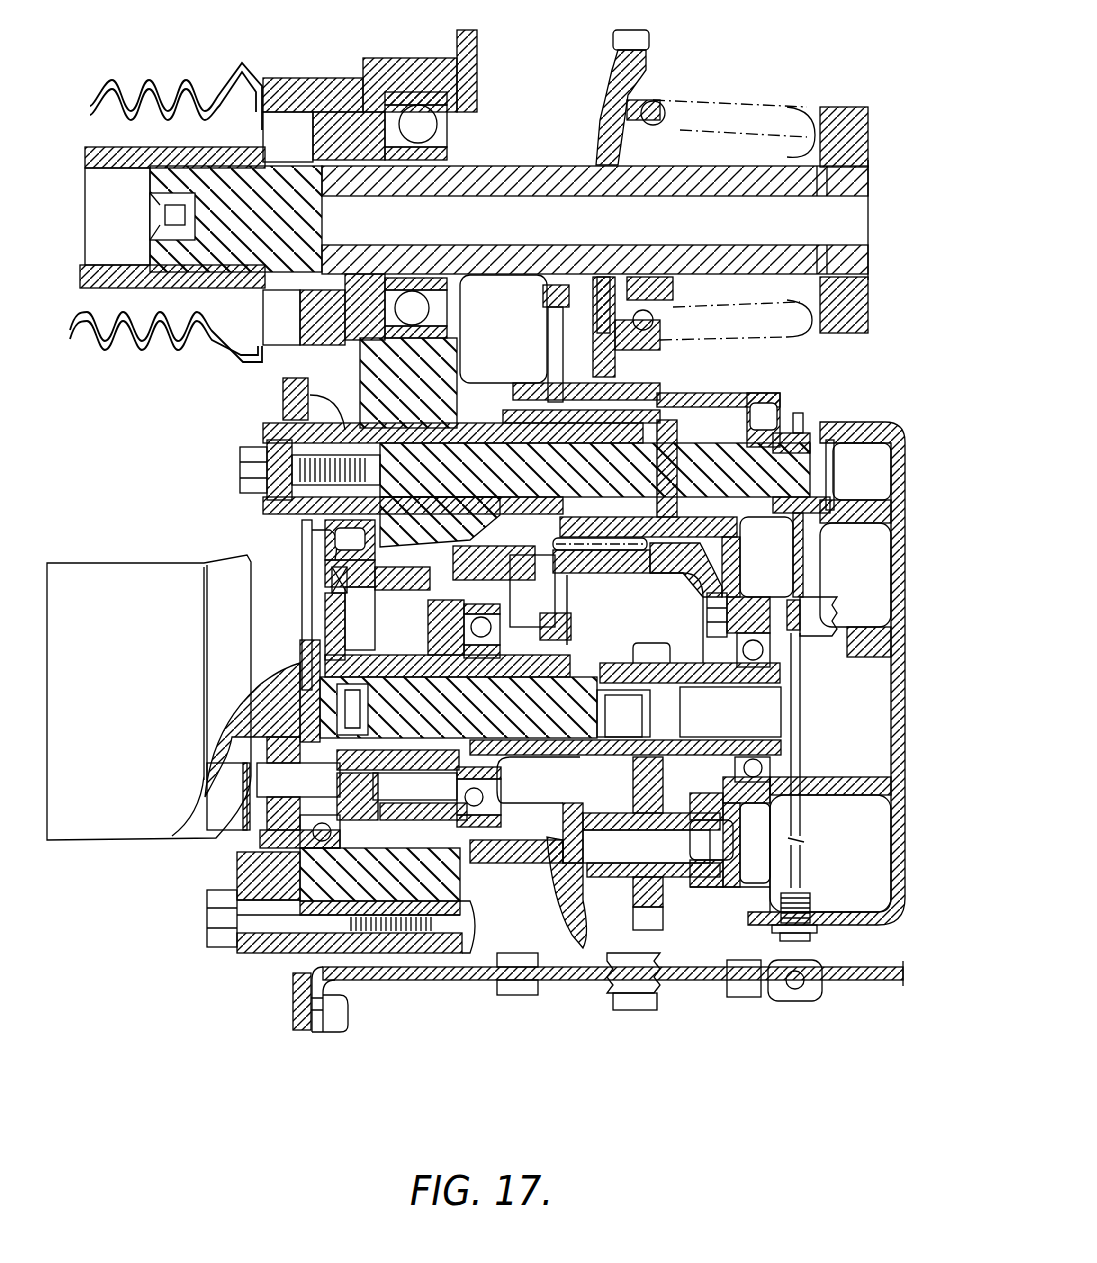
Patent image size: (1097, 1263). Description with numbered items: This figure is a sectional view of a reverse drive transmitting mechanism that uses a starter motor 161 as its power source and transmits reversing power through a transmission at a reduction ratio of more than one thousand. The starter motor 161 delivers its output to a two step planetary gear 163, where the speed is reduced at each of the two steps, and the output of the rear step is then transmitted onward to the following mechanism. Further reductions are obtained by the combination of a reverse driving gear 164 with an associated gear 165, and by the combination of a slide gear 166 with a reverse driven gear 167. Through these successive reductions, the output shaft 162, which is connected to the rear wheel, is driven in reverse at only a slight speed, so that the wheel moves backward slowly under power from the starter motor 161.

The starter motor 161 is at (100, 820).
The output shaft 162 is at (218, 205).
The two step planetary gear 163 is at (320, 870).
The reverse driving gear 164 is at (553, 772).
The associated gear 165 is at (553, 601).
The slide gear 166 is at (650, 397).
The reverse driven gear 167 is at (642, 40).